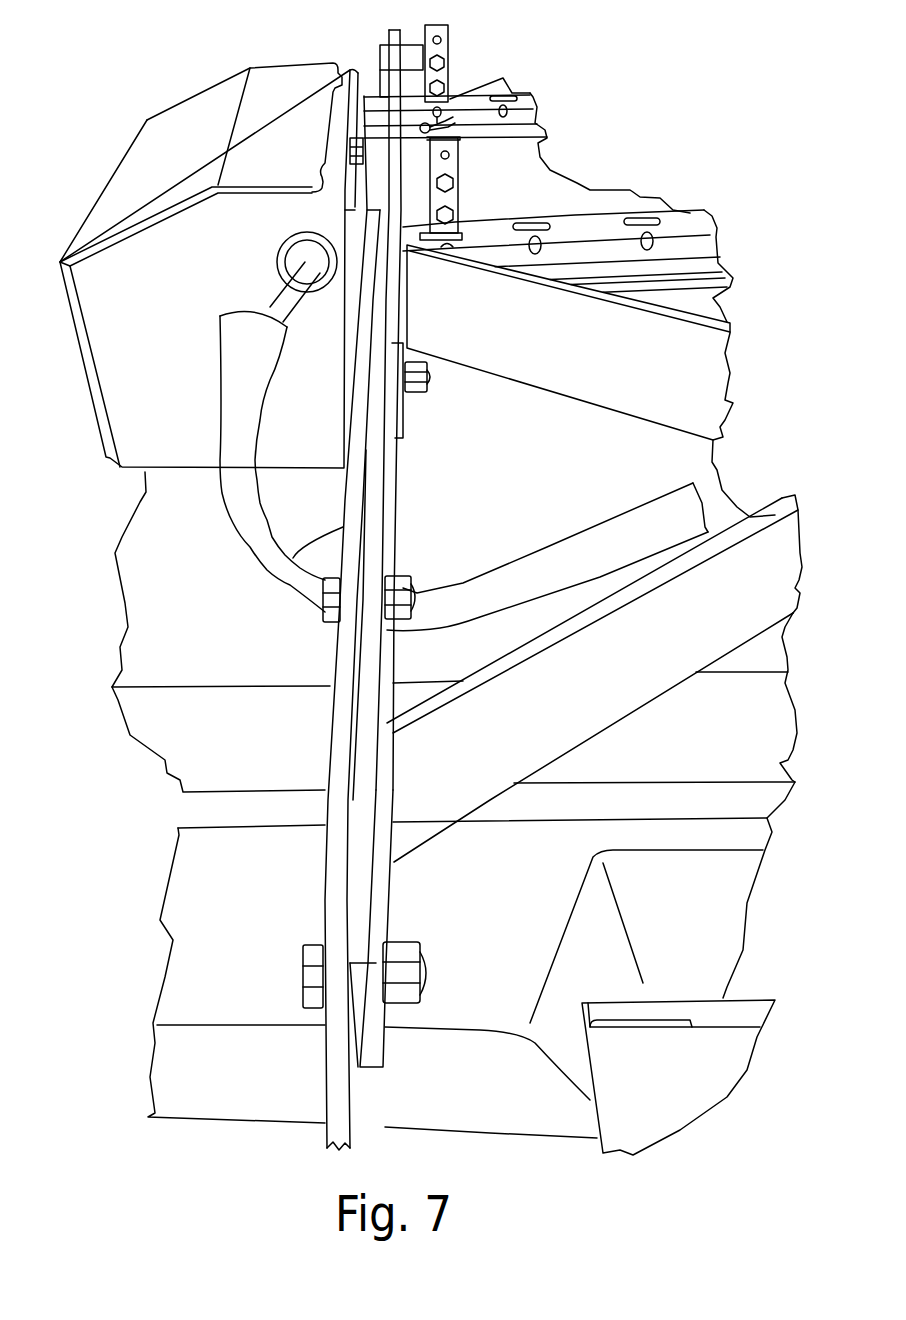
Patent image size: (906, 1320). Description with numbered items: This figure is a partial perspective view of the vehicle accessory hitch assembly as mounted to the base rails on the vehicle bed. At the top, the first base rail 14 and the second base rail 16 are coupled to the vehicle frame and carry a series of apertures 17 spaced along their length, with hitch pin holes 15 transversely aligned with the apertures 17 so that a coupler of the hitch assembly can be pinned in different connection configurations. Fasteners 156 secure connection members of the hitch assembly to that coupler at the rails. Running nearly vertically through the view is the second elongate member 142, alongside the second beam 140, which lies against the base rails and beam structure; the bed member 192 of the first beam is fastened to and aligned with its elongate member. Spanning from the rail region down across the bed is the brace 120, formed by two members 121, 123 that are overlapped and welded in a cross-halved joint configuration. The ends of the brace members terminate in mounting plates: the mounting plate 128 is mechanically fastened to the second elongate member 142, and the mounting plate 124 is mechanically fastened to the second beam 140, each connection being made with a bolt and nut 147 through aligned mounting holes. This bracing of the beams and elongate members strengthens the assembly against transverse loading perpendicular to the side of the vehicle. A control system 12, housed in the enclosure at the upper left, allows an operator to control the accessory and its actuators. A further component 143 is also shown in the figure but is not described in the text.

The control system 12 is at (150, 157).
The first base rail 14 is at (688, 245).
The hitch pin holes 15 is at (652, 245).
The second base rail 16 is at (530, 115).
The apertures 17 is at (639, 218).
The brace 120 is at (543, 715).
The member 121 is at (558, 368).
The member 123 is at (580, 610).
The mounting plate 124 is at (382, 913).
The mounting plate 128 is at (405, 332).
The second beam 140 is at (328, 763).
The second elongate member 142 is at (380, 178).
The rod 143 is at (387, 532).
The bolt and nut 147 is at (413, 390).
The fasteners 156 is at (446, 215).
The bed member 192 is at (343, 527).